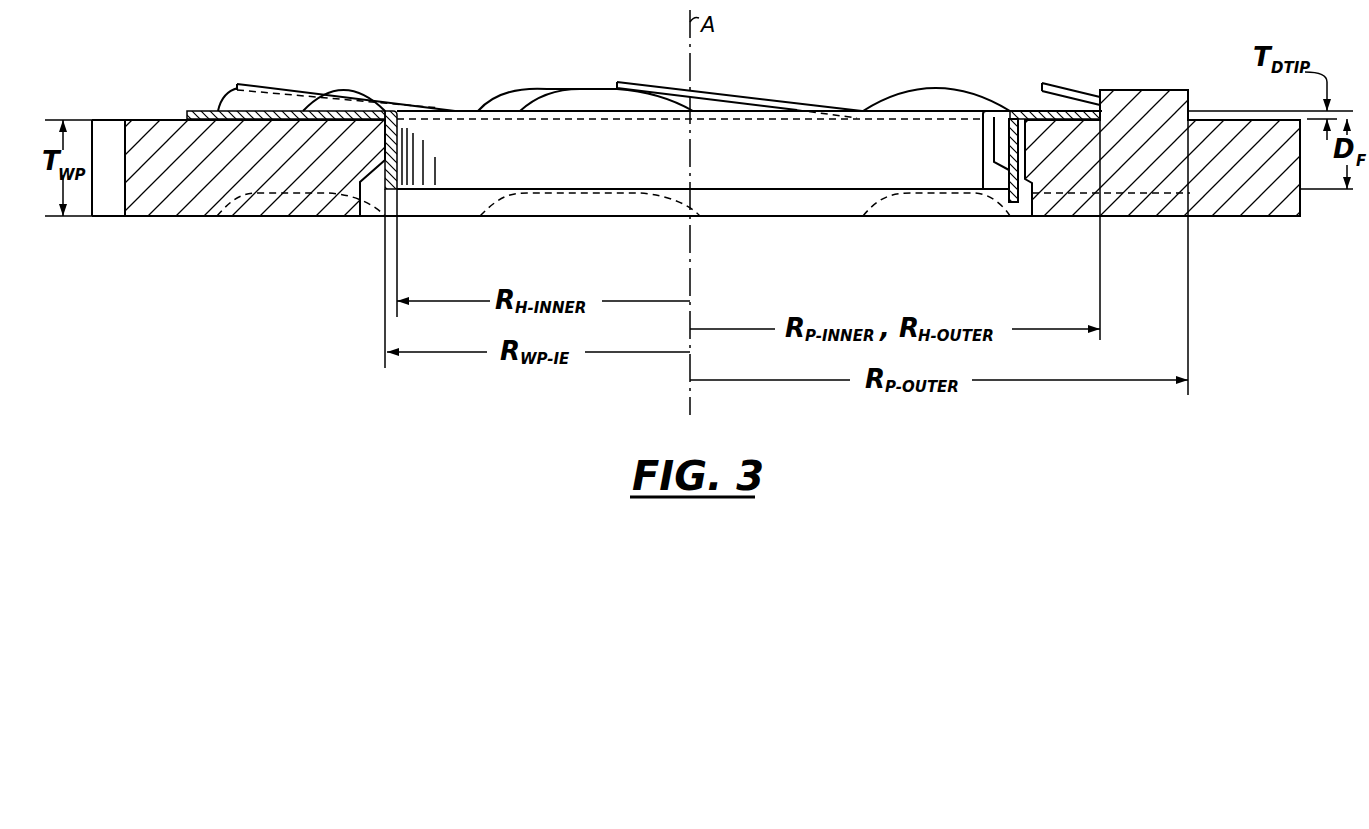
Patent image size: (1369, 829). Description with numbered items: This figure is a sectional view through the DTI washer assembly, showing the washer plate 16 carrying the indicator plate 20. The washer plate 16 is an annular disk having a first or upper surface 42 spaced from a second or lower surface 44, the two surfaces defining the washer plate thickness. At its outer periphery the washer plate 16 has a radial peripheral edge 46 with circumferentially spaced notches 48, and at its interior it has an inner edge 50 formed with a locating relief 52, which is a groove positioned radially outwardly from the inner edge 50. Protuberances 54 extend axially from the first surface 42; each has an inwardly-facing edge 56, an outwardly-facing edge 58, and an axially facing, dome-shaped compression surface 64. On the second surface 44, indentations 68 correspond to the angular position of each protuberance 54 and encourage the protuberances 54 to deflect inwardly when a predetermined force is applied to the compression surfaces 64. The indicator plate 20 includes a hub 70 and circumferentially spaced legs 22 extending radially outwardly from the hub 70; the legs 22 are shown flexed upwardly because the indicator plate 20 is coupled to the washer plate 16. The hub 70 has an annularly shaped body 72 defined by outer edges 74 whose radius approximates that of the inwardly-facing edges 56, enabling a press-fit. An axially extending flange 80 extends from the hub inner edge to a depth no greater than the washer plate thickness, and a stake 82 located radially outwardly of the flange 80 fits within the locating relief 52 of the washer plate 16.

The washer plate 16 is at (1312, 195).
The indicator plate 20 is at (918, 209).
The legs 22 is at (246, 86).
The first surface 42 is at (143, 119).
The second surface 44 is at (172, 216).
The radial peripheral edge 46 is at (92, 190).
The notches 48 is at (108, 207).
The inner edge 50 is at (1024, 148).
The locating relief 52 is at (1008, 126).
The protuberance 54 is at (560, 89).
The inwardly-facing edge 56 is at (1099, 97).
The outwardly-facing edge 58 is at (1190, 91).
The compression surface 64 is at (345, 90).
The indentations 68 is at (270, 190).
The hub 70 is at (1022, 109).
The body 72 is at (1037, 113).
The outer edges 74 is at (1100, 112).
The flange 80 is at (398, 148).
The stake 82 is at (1012, 176).